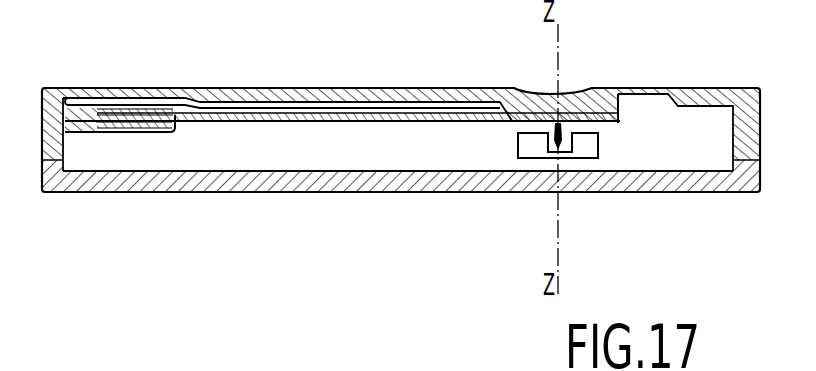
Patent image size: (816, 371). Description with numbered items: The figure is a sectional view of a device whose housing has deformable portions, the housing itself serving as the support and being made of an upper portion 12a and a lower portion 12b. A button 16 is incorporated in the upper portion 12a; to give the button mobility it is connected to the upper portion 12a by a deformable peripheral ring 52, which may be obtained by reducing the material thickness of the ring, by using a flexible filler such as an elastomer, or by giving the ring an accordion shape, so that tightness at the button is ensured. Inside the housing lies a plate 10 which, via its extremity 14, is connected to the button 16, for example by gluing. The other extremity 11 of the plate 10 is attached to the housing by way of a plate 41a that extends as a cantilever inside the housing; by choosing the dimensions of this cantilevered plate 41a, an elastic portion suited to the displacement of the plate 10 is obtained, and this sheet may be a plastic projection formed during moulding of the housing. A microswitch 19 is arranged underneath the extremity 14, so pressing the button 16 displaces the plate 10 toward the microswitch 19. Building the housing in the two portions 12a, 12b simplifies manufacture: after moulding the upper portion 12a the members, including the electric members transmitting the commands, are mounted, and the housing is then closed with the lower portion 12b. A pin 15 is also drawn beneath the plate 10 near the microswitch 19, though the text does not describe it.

The plate 10 is at (340, 118).
The other extremity 11 is at (176, 126).
The upper portion 12a is at (293, 92).
The lower portion 12b is at (290, 182).
The extremity 14 is at (495, 106).
The pin 15 is at (565, 126).
The button 16 is at (601, 88).
The microswitch 19 is at (585, 152).
The plate 41a is at (93, 88).
The deformable peripheral ring 52 is at (650, 88).